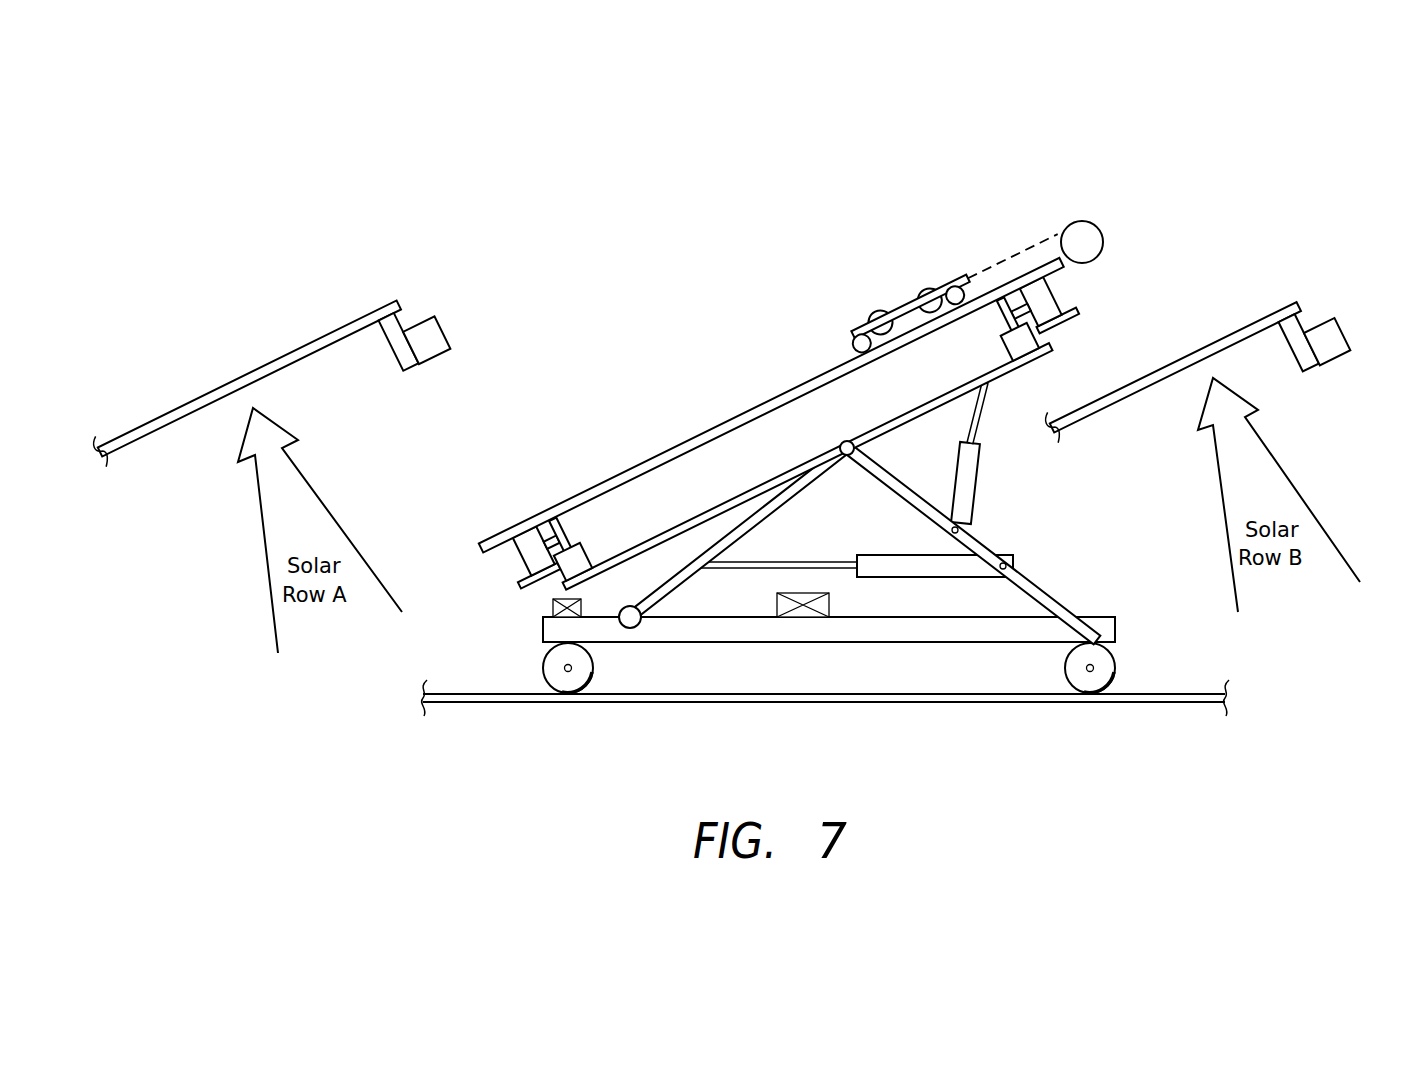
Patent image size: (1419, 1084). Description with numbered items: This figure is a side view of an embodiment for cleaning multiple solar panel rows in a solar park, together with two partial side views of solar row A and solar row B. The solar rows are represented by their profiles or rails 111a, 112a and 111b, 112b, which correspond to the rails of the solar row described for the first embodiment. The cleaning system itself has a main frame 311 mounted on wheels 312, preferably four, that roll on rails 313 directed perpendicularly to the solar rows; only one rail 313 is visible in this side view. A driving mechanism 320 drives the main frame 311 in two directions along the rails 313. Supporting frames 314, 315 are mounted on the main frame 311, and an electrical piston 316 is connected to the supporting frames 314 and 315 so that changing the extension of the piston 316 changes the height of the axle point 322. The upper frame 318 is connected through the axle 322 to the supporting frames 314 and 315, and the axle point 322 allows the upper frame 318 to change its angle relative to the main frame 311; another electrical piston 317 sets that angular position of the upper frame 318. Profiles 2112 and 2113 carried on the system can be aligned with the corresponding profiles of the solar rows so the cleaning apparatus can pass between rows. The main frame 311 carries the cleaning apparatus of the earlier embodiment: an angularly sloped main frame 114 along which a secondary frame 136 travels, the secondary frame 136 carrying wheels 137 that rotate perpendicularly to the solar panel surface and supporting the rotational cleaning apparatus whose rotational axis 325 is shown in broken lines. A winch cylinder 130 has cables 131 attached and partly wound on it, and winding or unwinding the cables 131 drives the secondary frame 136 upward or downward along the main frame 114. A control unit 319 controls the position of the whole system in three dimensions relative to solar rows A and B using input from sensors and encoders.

The profile 111a is at (298, 352).
The rail 112a is at (447, 330).
The profile 111b is at (1222, 338).
The rail 112b is at (1333, 317).
The main frame 114 is at (745, 408).
The winch cylinder 130 is at (1103, 227).
The cables 131 is at (1055, 231).
The secondary frame 136 is at (906, 307).
The wheels 137 is at (848, 341).
The rotational axis 325 is at (932, 288).
The profile 2112 is at (1001, 346).
The profile 2113 is at (588, 546).
The main frame 311 is at (1116, 625).
The wheels 312 is at (550, 660).
The rails 313 is at (812, 703).
The supporting frame 314 is at (1030, 573).
The supporting frame 315 is at (674, 588).
The electrical piston 316 is at (912, 553).
The electrical piston 317 is at (980, 488).
The upper frame 318 is at (802, 467).
The control unit 319 is at (832, 606).
The driving mechanism 320 is at (552, 609).
The axle 322 is at (843, 441).